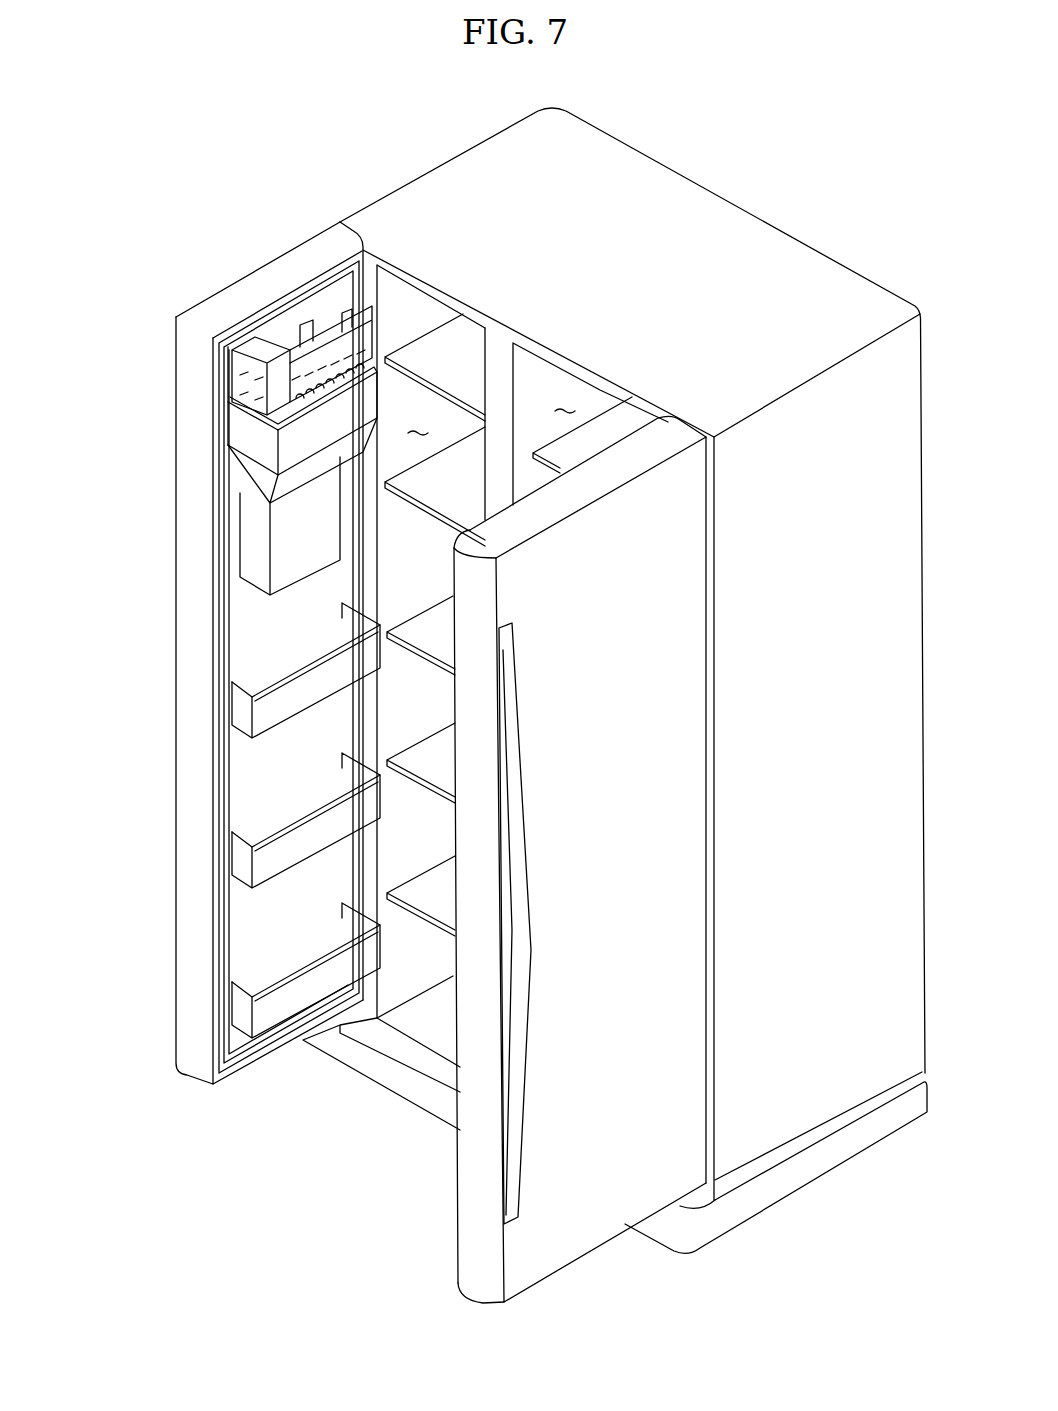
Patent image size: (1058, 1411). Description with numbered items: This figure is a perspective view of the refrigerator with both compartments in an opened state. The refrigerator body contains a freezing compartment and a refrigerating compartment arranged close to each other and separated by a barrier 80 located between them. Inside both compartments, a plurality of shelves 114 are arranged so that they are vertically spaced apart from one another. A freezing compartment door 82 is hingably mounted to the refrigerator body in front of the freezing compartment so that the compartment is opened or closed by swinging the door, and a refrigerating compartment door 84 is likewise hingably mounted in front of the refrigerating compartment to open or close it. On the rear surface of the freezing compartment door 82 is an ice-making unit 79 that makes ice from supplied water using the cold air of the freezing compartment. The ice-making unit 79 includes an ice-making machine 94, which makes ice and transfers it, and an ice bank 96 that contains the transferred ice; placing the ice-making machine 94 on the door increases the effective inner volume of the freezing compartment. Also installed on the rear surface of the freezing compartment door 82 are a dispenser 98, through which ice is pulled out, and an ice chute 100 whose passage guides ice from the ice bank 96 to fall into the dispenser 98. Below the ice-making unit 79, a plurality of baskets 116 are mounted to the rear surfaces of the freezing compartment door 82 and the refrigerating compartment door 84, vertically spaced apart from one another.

The ice-making unit 79 is at (102, 268).
The barrier 80 is at (535, 380).
The freezing compartment door 82 is at (200, 1030).
The refrigerating compartment door 84 is at (558, 1233).
The ice-making machine 94 is at (287, 342).
The ice bank 96 is at (248, 437).
The dispenser 98 is at (265, 545).
The ice chute 100 is at (248, 480).
The shelves 114 is at (458, 347).
The baskets 116 is at (242, 858).